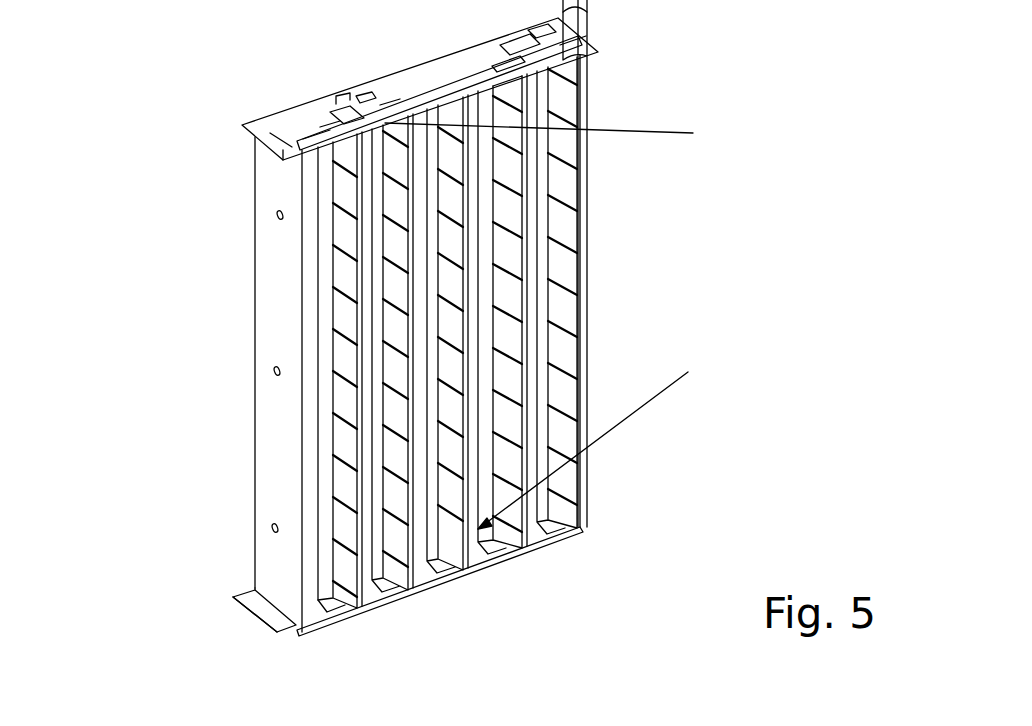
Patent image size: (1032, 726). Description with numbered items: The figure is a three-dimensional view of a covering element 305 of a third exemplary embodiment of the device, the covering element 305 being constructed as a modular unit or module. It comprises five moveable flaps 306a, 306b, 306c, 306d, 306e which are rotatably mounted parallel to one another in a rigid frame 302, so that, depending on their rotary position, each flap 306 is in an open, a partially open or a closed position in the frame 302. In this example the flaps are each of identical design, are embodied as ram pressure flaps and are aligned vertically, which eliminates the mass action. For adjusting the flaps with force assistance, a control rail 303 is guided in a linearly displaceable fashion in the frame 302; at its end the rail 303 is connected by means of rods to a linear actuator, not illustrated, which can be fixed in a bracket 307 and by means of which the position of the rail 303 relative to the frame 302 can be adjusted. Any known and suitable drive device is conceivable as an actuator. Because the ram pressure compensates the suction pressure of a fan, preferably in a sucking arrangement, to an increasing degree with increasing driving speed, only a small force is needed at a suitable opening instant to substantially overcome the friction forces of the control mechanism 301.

The control mechanism 301 is at (330, 67).
The rigid frame 302 is at (267, 348).
The control rail 303 is at (420, 82).
The covering element 305 is at (125, 513).
The flap 306 is at (505, 280).
The first flap 306a is at (263, 617).
The second flap 306b is at (393, 550).
The third flap 306c is at (442, 532).
The fourth flap 306d is at (513, 533).
The fifth flap 306e is at (573, 528).
The bracket 307 is at (606, 13).